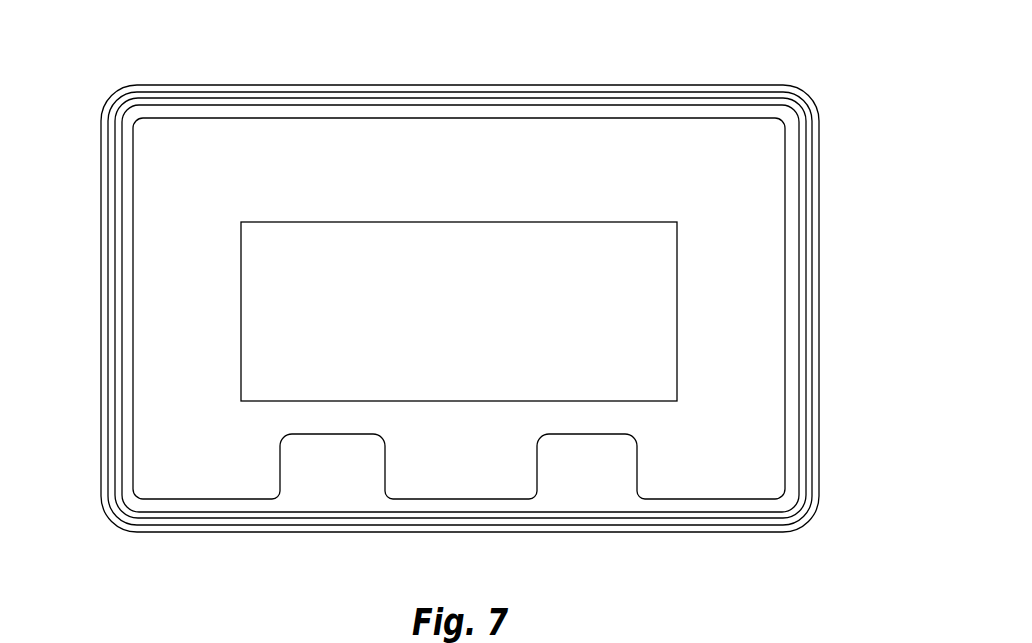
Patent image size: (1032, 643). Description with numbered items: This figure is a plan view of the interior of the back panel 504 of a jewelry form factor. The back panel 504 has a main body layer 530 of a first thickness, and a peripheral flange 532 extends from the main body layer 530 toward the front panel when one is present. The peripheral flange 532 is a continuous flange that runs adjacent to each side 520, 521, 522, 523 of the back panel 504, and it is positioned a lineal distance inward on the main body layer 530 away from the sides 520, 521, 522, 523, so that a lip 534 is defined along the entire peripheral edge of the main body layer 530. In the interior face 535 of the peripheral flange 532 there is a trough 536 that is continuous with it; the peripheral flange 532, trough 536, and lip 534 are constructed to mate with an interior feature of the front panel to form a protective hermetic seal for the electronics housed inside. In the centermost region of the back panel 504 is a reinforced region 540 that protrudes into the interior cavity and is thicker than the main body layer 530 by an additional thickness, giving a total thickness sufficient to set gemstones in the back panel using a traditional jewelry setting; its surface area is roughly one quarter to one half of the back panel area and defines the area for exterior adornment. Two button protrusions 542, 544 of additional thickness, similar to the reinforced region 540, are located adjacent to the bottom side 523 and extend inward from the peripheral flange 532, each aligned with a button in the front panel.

The back panel 504 is at (820, 210).
The side 520 is at (99, 177).
The side 521 is at (811, 333).
The side 522 is at (210, 83).
The bottom side 523 is at (233, 533).
The main body layer 530 is at (167, 432).
The peripheral flange 532 is at (782, 305).
The lip 534 is at (743, 533).
The interior face 535 is at (360, 92).
The trough 536 is at (628, 97).
The reinforced region 540 is at (480, 277).
The button protrusion 542 is at (328, 457).
The button protrusion 544 is at (590, 458).